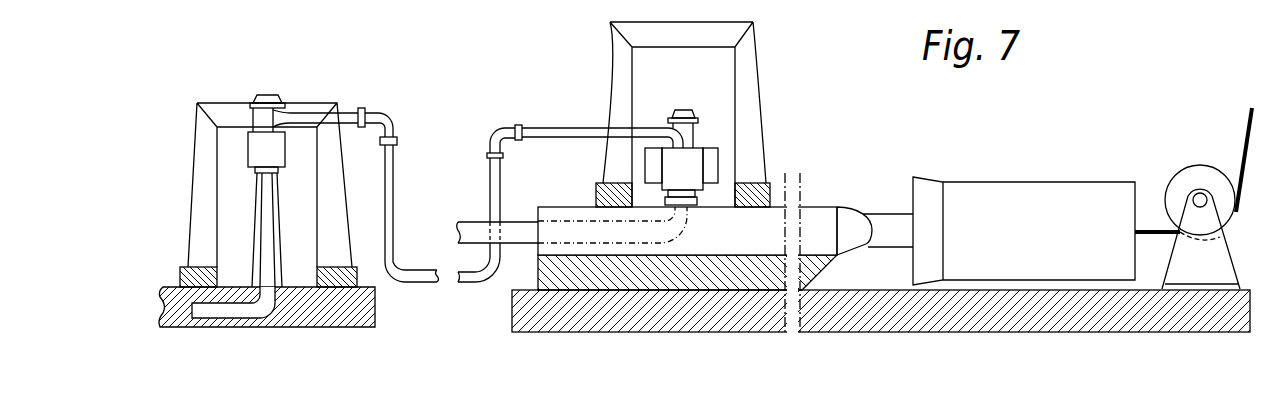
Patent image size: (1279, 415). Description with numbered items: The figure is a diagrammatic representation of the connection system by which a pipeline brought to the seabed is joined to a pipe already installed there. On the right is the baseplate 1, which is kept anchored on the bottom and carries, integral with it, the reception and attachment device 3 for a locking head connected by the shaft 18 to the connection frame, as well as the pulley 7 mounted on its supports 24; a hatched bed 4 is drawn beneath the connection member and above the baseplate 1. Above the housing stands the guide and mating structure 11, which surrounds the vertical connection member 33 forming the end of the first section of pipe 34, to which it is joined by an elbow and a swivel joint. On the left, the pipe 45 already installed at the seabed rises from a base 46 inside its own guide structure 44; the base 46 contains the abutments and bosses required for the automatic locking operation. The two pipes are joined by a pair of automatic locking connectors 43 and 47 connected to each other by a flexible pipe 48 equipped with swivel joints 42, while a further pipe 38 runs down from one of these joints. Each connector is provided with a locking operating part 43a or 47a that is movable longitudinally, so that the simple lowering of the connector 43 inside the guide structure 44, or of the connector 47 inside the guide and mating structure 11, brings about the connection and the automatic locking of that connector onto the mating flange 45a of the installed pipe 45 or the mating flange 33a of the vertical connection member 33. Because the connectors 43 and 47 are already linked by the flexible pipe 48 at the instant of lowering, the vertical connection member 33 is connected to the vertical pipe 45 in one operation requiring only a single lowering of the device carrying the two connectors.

The baseplate 1 is at (525, 303).
The reception and attachment device 3 is at (995, 197).
The support bed 4 is at (775, 268).
The pulley 7 is at (1182, 178).
The guide and mating structure 11 is at (743, 100).
The shaft 18 is at (875, 222).
The supports 24 is at (1212, 257).
The vertical connection member 33 is at (690, 220).
The mating flange 33a is at (718, 182).
The first section of pipe 34 is at (523, 232).
The return pipe 38 is at (389, 218).
The swivel joints 42 is at (380, 118).
The automatic locking connector 43 is at (257, 147).
The locking operating part 43a is at (267, 95).
The guide structure 44 is at (205, 197).
The pipe 45 is at (263, 205).
The mating flange 45a is at (278, 170).
The base 46 is at (353, 308).
The automatic locking connector 47 is at (683, 163).
The locking operating part 47a is at (684, 110).
The flexible pipe 48 is at (348, 115).